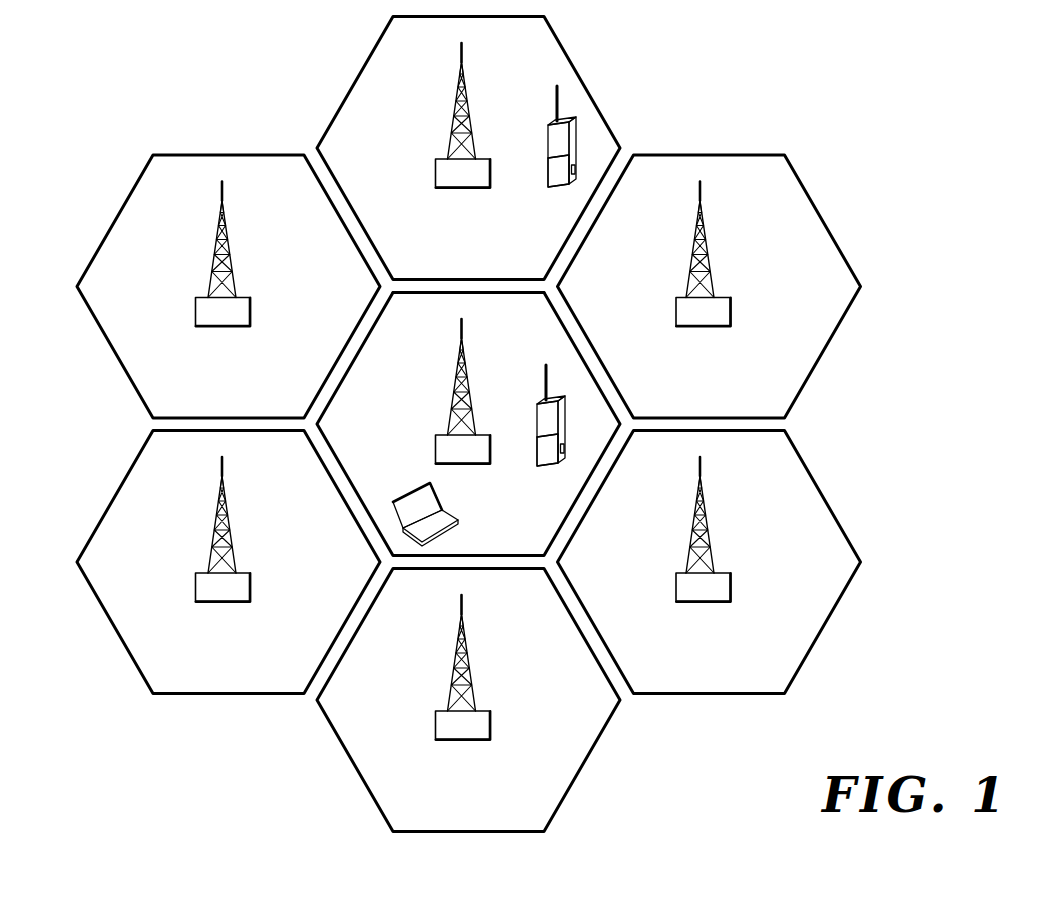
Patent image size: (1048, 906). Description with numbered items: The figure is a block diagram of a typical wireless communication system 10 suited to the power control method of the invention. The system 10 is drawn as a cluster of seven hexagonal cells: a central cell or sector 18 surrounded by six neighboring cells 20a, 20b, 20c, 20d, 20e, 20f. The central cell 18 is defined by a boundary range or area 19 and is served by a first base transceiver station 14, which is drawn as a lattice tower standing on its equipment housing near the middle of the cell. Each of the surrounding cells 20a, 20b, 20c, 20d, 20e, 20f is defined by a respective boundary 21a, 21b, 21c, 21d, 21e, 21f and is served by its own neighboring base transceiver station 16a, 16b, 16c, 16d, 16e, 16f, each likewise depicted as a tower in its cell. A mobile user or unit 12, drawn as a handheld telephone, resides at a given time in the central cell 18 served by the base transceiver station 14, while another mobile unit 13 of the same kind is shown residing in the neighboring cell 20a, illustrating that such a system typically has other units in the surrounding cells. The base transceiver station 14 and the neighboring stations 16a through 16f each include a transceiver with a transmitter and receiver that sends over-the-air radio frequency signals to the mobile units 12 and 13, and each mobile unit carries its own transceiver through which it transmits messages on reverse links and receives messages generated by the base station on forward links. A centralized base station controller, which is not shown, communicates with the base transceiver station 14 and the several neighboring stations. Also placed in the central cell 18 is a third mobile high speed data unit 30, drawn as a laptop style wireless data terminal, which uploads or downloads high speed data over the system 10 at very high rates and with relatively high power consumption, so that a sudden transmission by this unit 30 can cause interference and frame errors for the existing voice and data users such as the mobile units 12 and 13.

The communication system 10 is at (893, 726).
The mobile unit 12 is at (545, 437).
The mobile unit 13 is at (549, 151).
The first base transceiver station 14 is at (463, 409).
The neighboring base transceiver station 16a is at (438, 133).
The neighboring base transceiver station 16b is at (677, 270).
The neighboring base transceiver station 16c is at (676, 547).
The neighboring base transceiver station 16d is at (439, 684).
The neighboring base transceiver station 16e is at (199, 547).
The neighboring base transceiver station 16f is at (199, 271).
The cell 18 is at (422, 332).
The boundary range 19 is at (477, 284).
The cell 20a is at (477, 148).
The cell 20b is at (720, 286).
The cell 20c is at (727, 562).
The cell 20d is at (486, 700).
The cell 20e is at (219, 562).
The cell 20f is at (219, 286).
The boundary 21a is at (573, 69).
The boundary 21b is at (820, 211).
The boundary 21c is at (830, 501).
The boundary 21d is at (583, 755).
The boundary 21e is at (115, 629).
The boundary 21f is at (114, 355).
The mobile high speed data unit 30 is at (447, 515).